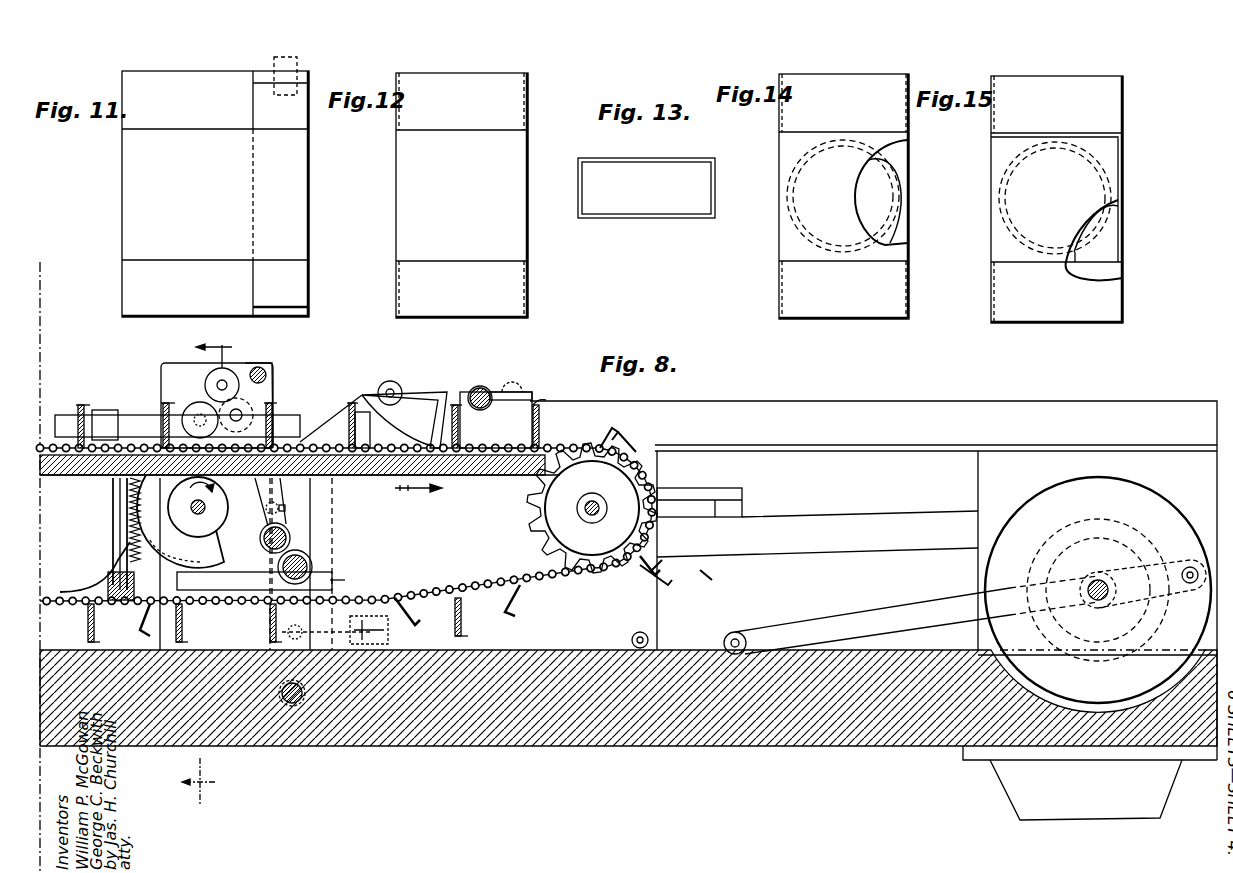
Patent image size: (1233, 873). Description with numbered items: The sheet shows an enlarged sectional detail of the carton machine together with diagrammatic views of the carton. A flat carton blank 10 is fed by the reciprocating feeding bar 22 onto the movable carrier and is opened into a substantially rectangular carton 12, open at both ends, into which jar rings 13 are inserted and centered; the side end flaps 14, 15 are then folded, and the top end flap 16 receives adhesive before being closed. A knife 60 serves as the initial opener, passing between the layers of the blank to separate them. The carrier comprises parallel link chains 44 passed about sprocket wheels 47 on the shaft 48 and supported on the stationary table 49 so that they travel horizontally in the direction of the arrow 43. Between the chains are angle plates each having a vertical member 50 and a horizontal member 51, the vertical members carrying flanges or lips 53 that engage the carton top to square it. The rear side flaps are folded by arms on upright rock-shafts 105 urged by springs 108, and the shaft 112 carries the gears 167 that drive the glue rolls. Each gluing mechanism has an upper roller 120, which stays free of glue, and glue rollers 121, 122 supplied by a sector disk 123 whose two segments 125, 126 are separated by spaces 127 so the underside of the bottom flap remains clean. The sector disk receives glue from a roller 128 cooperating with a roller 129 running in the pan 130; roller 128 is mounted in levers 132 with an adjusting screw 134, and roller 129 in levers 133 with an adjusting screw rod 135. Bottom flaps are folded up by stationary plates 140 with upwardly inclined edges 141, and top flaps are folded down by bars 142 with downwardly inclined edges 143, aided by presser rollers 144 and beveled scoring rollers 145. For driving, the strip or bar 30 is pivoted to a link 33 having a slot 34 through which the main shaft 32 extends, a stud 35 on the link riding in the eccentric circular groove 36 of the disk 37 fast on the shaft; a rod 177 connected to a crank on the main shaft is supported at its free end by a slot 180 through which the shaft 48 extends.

In FIG. 11, the carton blank 10 is at (121, 222).
In FIG. 12, the carton 12 is at (396, 212).
In FIG. 13, the carton 12 is at (646, 177).
In FIG. 14, the carton 12 is at (779, 205).
In FIG. 15, the carton 12 is at (991, 205).
In FIG. 14, the jar rings 13 is at (896, 197).
In FIG. 11, the side end flap 14 is at (301, 118).
In FIG. 12, the side end flap 14 is at (524, 116).
In FIG. 15, the side end flap 14 is at (1094, 240).
In FIG. 12, the rear side flap 15 is at (398, 290).
In FIG. 11, the top end flap 16 is at (122, 80).
In FIG. 12, the top end flap 16 is at (528, 98).
In FIG. 14, the top end flap 16 is at (790, 112).
In FIG. 15, the top end flap 16 is at (1118, 112).
In FIG. 8, the feeding bar 22 is at (207, 576).
In FIG. 8, the strip or bar 30 is at (585, 650).
In FIG. 8, the main shaft 32 is at (1090, 583).
In FIG. 8, the link 33 is at (908, 600).
In FIG. 8, the slot 34 is at (1142, 598).
In FIG. 8, the stud or pin 35 is at (1190, 560).
In FIG. 8, the circular groove 36 is at (1068, 622).
In FIG. 8, the disk 37 is at (1022, 512).
In FIG. 8, the arrow 43 is at (418, 497).
In FIG. 8, the link chains 44 is at (590, 444).
In FIG. 8, the sprocket wheels 47 is at (545, 508).
In FIG. 8, the shaft 48 is at (585, 512).
In FIG. 8, the platform or table 49 is at (468, 475).
In FIG. 8, the vertical member 50 is at (78, 412).
In FIG. 8, the horizontal member 51 is at (180, 620).
In FIG. 8, the flanges or lips 53 is at (85, 405).
In FIG. 11, the knife 60 is at (297, 67).
In FIG. 8, the rock-shafts 105 is at (113, 522).
In FIG. 8, the springs 108 is at (108, 575).
In FIG. 8, the shaft 112 is at (195, 515).
In FIG. 8, the upper roller 120 is at (215, 378).
In FIG. 8, the roller 121 is at (240, 408).
In FIG. 8, the roller 122 is at (212, 410).
In FIG. 8, the sector disk 123 is at (215, 520).
In FIG. 8, the segment 125 is at (215, 480).
In FIG. 8, the segment 126 is at (168, 559).
In FIG. 8, the spaces 127 is at (226, 512).
In FIG. 8, the roller 128 is at (290, 538).
In FIG. 8, the roller 129 is at (312, 560).
In FIG. 8, the pan 130 is at (332, 572).
In FIG. 8, the levers 132 is at (284, 490).
In FIG. 8, the levers 133 is at (270, 626).
In FIG. 8, the adjusting screw 134 is at (286, 508).
In FIG. 8, the adjusting screw rod 135 is at (386, 630).
In FIG. 8, the plates 140 is at (360, 410).
In FIG. 8, the upwardly inclined edges 141 is at (312, 430).
In FIG. 8, the bars 142 is at (415, 410).
In FIG. 8, the downwardly inclined edges 143 is at (397, 420).
In FIG. 8, the presser rollers 144 is at (395, 382).
In FIG. 8, the scoring rollers 145 is at (484, 386).
In FIG. 8, the gears 167 is at (128, 490).
In FIG. 8, the link or rod 177 is at (820, 518).
In FIG. 8, the slot 180 is at (700, 500).